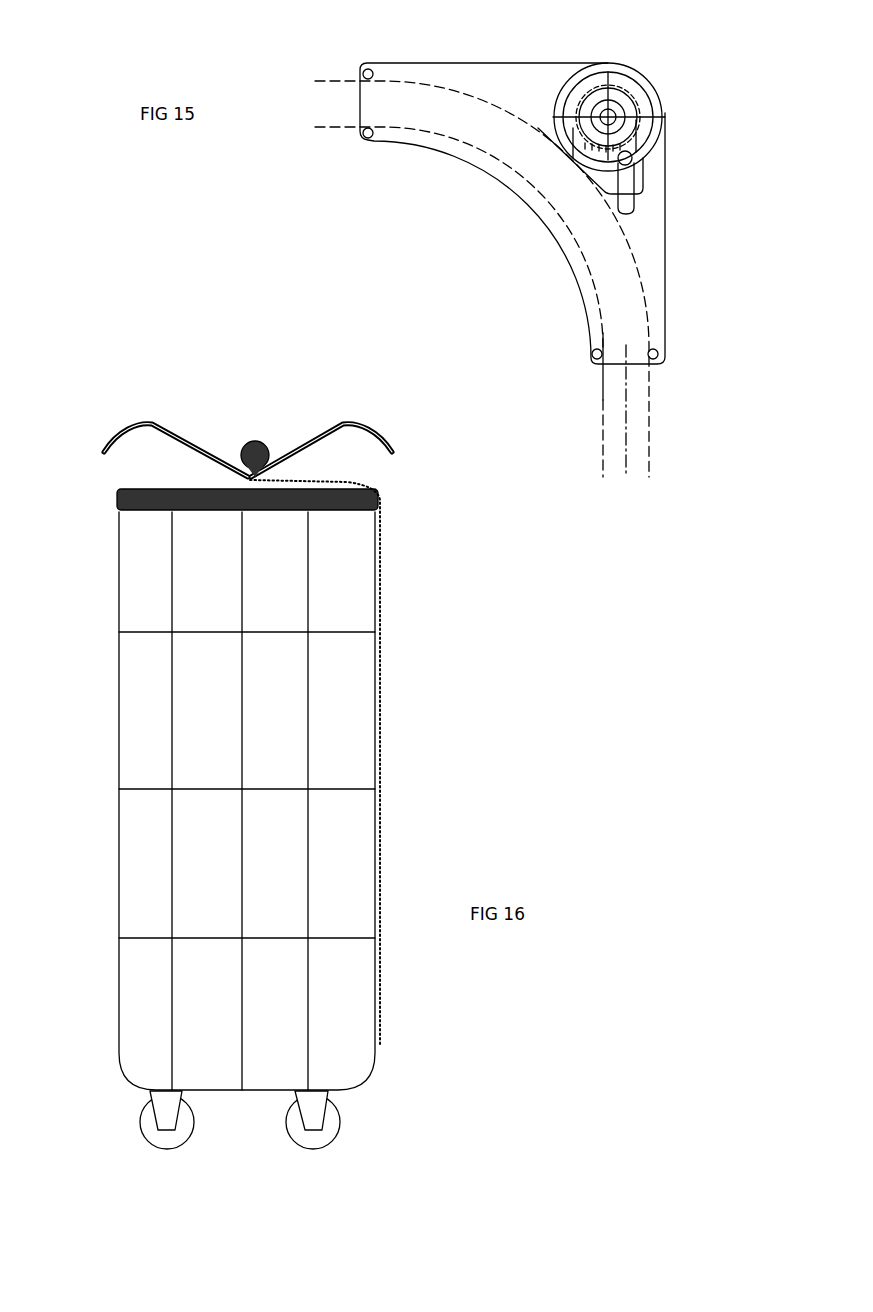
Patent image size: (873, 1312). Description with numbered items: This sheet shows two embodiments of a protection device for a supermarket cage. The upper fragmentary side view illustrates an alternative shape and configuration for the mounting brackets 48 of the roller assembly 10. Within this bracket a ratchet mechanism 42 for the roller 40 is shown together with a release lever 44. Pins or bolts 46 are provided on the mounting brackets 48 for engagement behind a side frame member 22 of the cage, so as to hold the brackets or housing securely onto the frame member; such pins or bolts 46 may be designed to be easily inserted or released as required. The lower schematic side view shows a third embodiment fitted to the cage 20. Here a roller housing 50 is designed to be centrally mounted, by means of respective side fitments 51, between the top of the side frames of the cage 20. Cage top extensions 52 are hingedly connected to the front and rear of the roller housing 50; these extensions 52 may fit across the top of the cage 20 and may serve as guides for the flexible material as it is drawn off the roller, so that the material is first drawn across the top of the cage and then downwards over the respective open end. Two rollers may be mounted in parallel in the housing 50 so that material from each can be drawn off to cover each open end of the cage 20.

In FIG. 15, the roller assembly 10 is at (552, 182).
In FIG. 15, the cage 20 is at (516, 279).
In FIG. 16, the cage 20 is at (215, 830).
In FIG. 15, the side frame member 22 is at (603, 397).
In FIG. 16, the side frame member 22 is at (172, 588).
In FIG. 15, the roller 40 is at (615, 109).
In FIG. 15, the ratchet mechanism 42 is at (635, 110).
In FIG. 15, the release lever 44 is at (643, 209).
In FIG. 15, the pins or bolts 46 is at (372, 138).
In FIG. 15, the mounting brackets 48 is at (512, 186).
In FIG. 16, the roller housing 50 is at (248, 444).
In FIG. 16, the side fitments 51 is at (150, 488).
In FIG. 16, the cage top extensions 52 is at (110, 437).